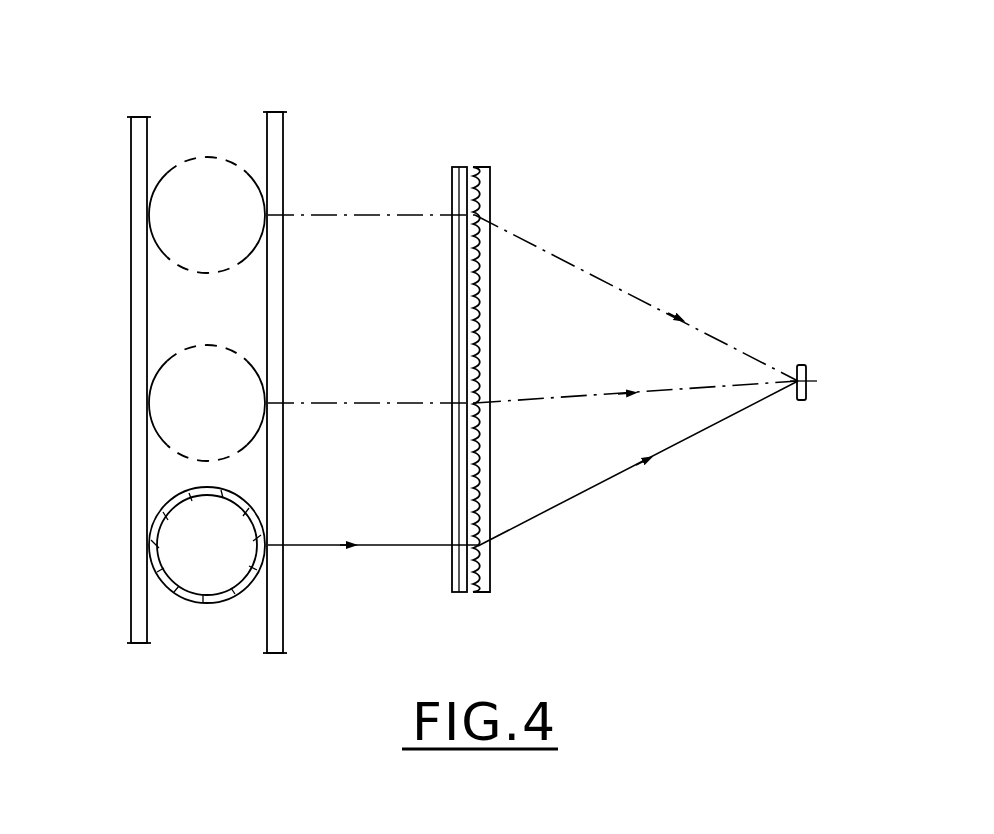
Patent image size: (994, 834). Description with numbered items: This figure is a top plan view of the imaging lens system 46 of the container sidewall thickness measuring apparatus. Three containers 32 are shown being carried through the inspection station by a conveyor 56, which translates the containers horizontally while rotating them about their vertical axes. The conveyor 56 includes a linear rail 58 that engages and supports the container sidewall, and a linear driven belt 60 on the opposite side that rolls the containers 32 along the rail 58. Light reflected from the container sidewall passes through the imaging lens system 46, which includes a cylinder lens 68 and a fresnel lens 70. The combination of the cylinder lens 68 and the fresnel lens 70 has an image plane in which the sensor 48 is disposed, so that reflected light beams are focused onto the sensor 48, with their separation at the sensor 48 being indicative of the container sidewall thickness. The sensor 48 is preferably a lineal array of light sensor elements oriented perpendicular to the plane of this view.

The container 32 is at (237, 353).
The imaging lens system 46 is at (622, 160).
The sensor 48 is at (805, 365).
The conveyor 56 is at (224, 82).
The linear rail 58 is at (283, 147).
The linear driven belt 60 is at (131, 133).
The cylinder lens 68 is at (455, 167).
The fresnel lens 70 is at (490, 175).